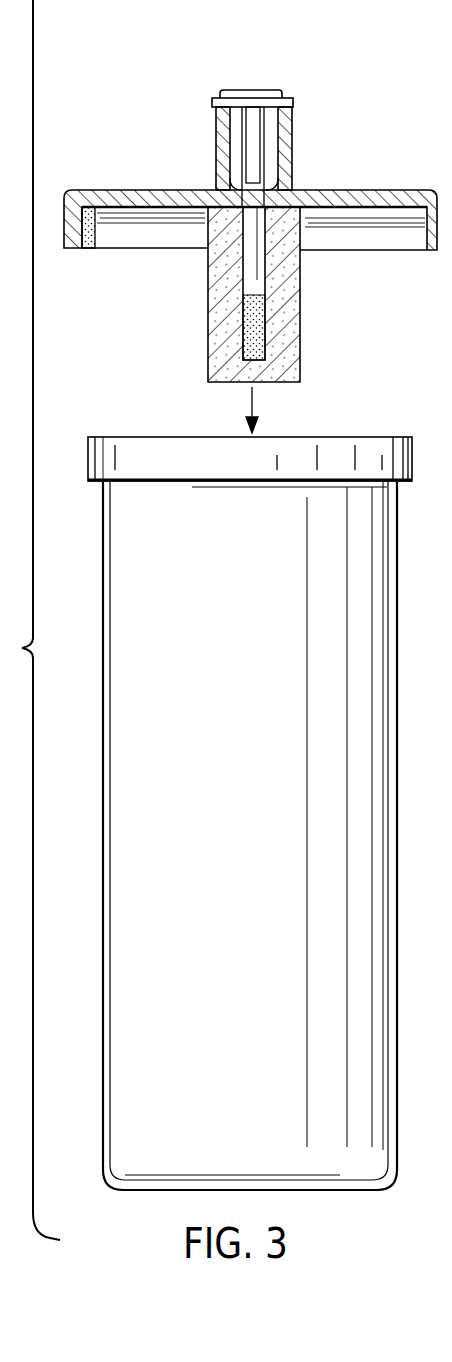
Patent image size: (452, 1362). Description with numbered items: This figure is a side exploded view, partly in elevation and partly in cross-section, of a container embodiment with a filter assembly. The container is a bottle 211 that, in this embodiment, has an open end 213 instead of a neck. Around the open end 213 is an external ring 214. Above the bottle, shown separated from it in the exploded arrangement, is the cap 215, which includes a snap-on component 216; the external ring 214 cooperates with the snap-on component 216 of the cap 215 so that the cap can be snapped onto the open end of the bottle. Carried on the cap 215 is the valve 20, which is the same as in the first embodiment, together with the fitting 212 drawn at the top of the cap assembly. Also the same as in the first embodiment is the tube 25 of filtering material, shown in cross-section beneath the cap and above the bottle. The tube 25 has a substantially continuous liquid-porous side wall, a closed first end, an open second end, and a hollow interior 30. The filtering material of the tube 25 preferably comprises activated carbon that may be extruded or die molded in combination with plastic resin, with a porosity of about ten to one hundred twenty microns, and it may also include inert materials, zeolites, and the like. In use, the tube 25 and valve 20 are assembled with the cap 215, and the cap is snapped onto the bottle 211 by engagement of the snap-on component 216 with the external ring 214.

The valve 20 is at (338, 108).
The luer fitting 212 is at (155, 92).
The cap 215 is at (126, 178).
The snap-on component 216 is at (93, 233).
The tube 25 is at (311, 315).
The hollow interior 30 is at (252, 327).
The open end 213 is at (145, 432).
The external ring 214 is at (325, 460).
The bottle 211 is at (143, 740).